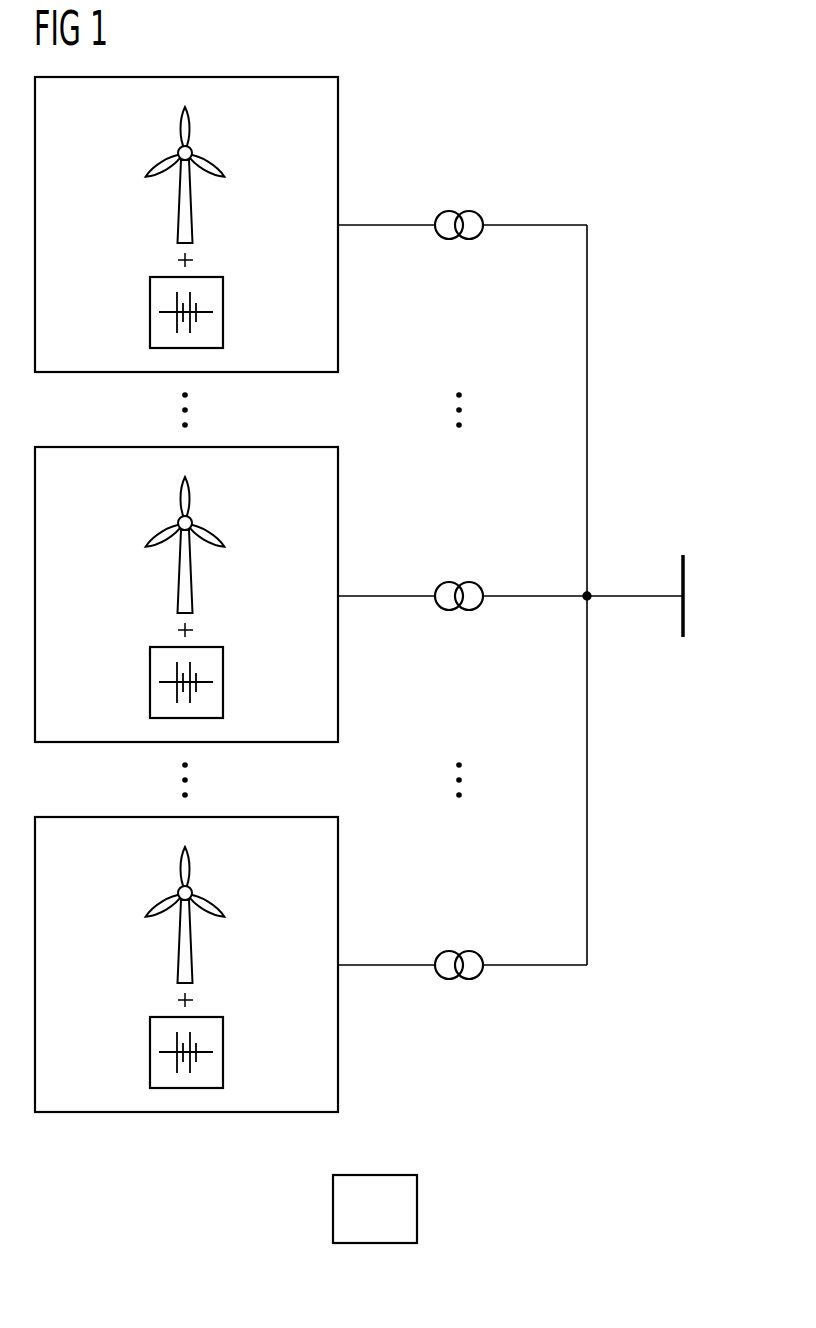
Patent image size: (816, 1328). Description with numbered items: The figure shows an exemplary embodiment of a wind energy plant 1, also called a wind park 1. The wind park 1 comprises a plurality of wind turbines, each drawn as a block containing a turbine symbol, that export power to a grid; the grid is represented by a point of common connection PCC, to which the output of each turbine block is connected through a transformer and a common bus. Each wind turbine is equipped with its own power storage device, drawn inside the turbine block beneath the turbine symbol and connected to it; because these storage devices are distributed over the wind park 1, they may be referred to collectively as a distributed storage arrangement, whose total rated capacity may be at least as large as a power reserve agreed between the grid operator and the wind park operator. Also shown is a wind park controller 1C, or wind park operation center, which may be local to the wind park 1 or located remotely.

The wind energy plant 1 is at (588, 163).
The wind park controller 1C is at (417, 1209).
The point of common connection PCC is at (682, 578).